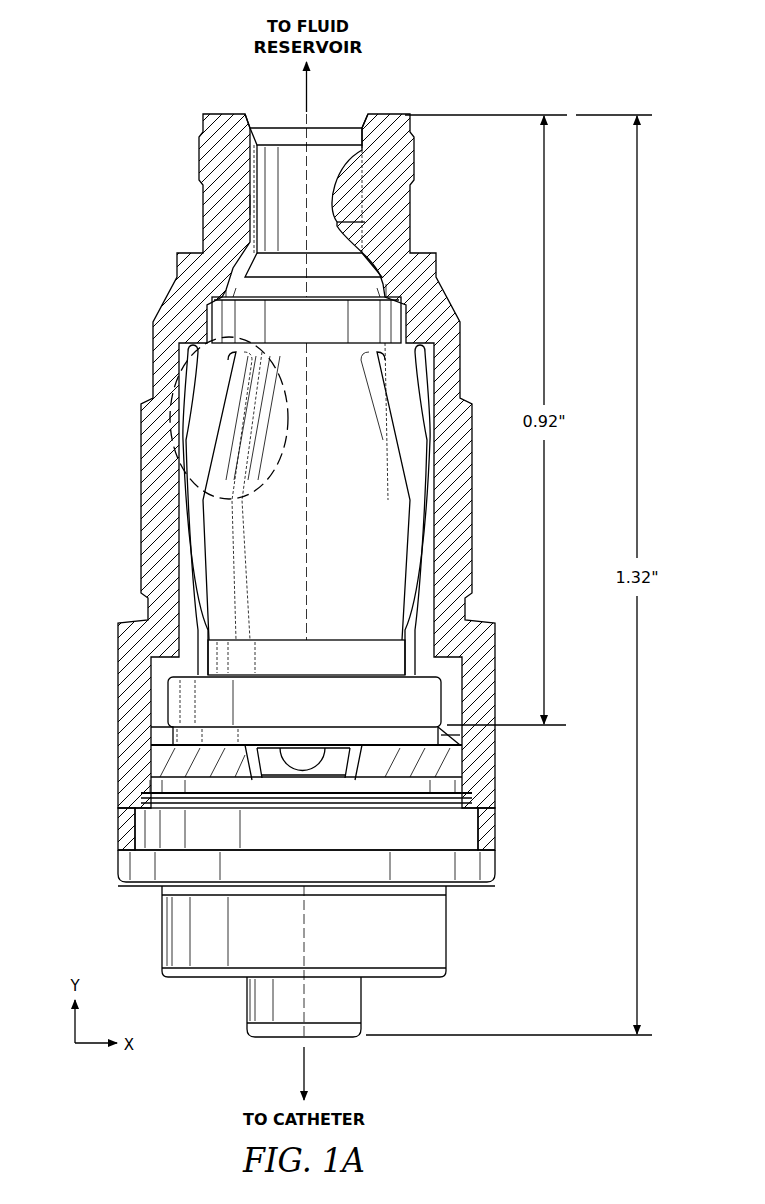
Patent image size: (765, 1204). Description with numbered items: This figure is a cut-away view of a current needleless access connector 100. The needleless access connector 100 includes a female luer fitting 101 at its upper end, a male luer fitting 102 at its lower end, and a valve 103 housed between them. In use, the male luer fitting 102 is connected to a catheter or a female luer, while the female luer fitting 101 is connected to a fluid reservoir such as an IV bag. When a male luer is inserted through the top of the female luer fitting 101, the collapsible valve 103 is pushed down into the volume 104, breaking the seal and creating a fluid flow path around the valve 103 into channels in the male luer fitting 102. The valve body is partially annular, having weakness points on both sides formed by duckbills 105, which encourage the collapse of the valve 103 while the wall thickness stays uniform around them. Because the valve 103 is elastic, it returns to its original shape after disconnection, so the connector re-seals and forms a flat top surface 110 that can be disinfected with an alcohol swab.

The needleless access connector 100 is at (123, 117).
The female luer fitting 101 is at (412, 212).
The male luer fitting 102 is at (446, 925).
The valve 103 is at (390, 450).
The volume 104 is at (428, 377).
The duckbills 105 is at (170, 386).
The top surface 110 is at (330, 110).